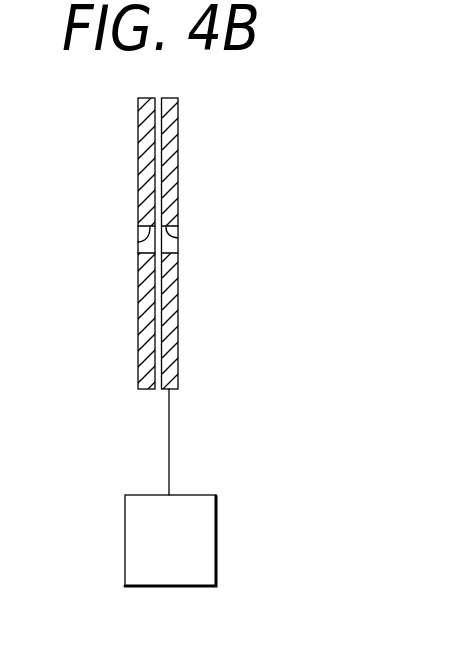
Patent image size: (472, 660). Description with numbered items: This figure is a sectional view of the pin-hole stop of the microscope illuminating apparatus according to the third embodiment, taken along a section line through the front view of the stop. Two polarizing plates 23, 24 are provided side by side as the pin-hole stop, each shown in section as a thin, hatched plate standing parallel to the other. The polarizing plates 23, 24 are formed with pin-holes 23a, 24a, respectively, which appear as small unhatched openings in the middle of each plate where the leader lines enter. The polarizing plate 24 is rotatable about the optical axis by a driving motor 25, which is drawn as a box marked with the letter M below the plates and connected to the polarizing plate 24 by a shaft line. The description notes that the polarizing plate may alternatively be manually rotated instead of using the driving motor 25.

The polarizing plate 23 is at (138, 117).
The polarizing plate 24 is at (180, 124).
The pin-hole 23a is at (138, 242).
The pin-hole 24a is at (178, 238).
The driving motor 25 is at (216, 560).